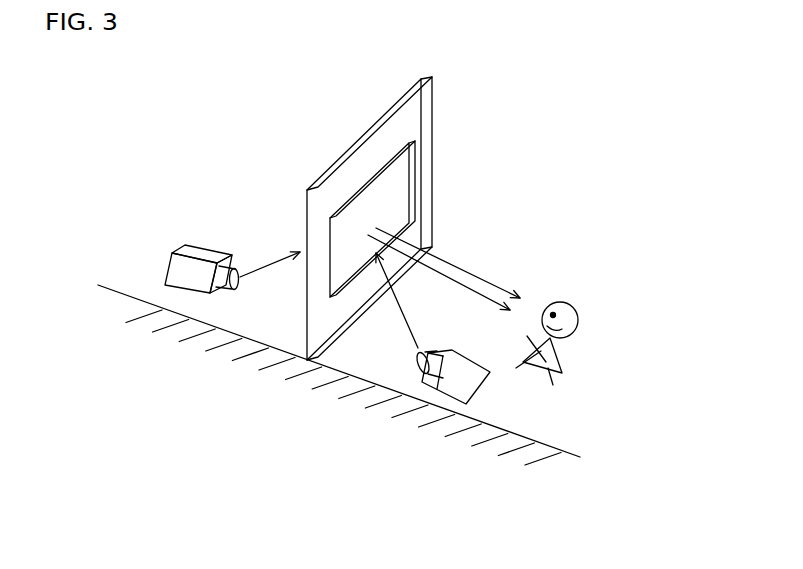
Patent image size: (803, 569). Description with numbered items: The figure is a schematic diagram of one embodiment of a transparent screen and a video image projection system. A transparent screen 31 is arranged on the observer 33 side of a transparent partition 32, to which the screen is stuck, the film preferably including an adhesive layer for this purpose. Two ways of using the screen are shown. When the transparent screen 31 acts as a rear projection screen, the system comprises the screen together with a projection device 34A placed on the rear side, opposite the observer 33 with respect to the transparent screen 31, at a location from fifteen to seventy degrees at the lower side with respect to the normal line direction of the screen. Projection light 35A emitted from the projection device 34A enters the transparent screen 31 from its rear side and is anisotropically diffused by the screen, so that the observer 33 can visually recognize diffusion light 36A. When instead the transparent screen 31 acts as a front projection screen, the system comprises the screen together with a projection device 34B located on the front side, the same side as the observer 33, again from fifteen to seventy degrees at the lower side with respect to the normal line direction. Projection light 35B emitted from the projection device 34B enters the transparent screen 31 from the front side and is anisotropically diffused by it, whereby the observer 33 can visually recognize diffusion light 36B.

The transparent screen 31 is at (405, 212).
The transparent partition 32 is at (407, 117).
The observer 33 is at (567, 352).
The projection device 34A is at (209, 238).
The projection device 34B is at (495, 385).
The projection light 35A is at (270, 275).
The projection light 35B is at (394, 301).
The diffusion light 36A is at (448, 263).
The diffusion light 36B is at (439, 272).